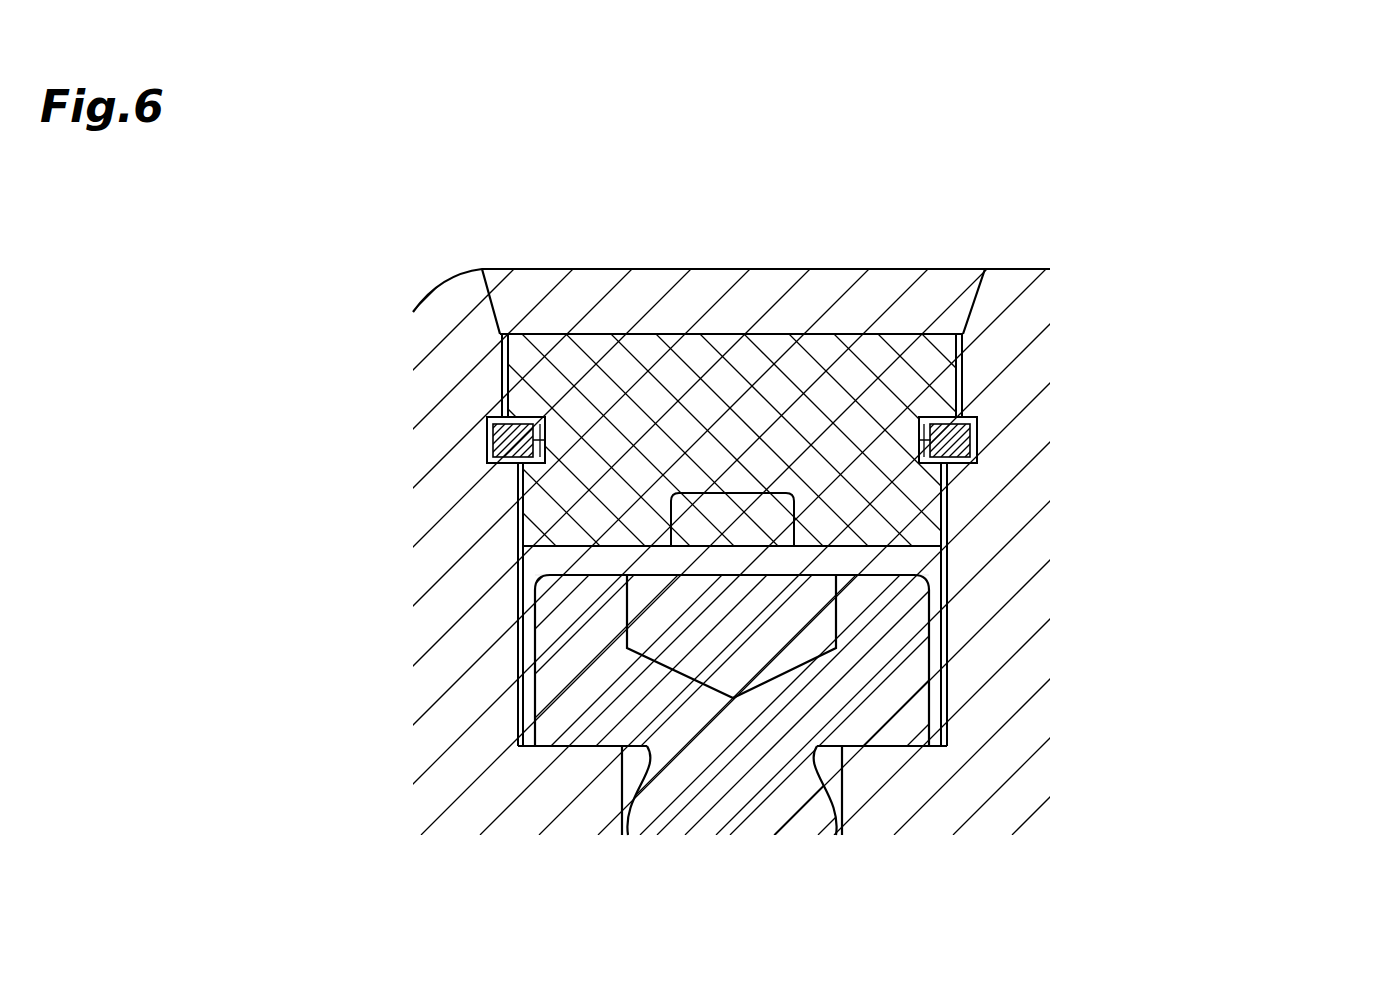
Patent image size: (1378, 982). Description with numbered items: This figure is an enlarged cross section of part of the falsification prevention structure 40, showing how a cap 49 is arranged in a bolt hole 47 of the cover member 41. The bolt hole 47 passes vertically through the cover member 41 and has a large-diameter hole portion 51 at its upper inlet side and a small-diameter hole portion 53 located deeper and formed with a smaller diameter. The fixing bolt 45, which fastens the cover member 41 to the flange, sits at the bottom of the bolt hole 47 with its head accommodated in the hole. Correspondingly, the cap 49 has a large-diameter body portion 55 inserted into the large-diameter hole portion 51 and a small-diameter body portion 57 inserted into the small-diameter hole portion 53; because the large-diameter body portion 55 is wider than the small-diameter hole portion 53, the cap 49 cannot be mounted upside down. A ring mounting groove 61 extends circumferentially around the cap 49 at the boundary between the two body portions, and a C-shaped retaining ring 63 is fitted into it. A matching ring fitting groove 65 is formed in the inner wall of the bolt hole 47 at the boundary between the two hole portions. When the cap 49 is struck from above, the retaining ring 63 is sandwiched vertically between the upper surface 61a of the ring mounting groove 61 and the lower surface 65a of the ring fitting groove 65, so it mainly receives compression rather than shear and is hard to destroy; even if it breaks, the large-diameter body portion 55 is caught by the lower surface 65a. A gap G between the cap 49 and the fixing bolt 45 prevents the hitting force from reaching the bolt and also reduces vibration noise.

The falsification prevention structure 40 is at (1280, 184).
The cover member 41 is at (1010, 281).
The fixing bolt 45 is at (903, 698).
The bolt hole 47 is at (933, 585).
The cap 49 is at (688, 332).
The large-diameter hole portion 51 is at (944, 378).
The small-diameter hole portion 53 is at (943, 493).
The large-diameter body portion 55 is at (522, 388).
The small-diameter body portion 57 is at (517, 515).
The ring mounting groove 61 is at (540, 505).
The upper surface of ring mounting groove 61a is at (538, 438).
The retaining ring 63 is at (500, 437).
The ring fitting groove 65 is at (940, 452).
The lower surface of ring fitting groove 65a is at (487, 452).
The gap G is at (865, 554).